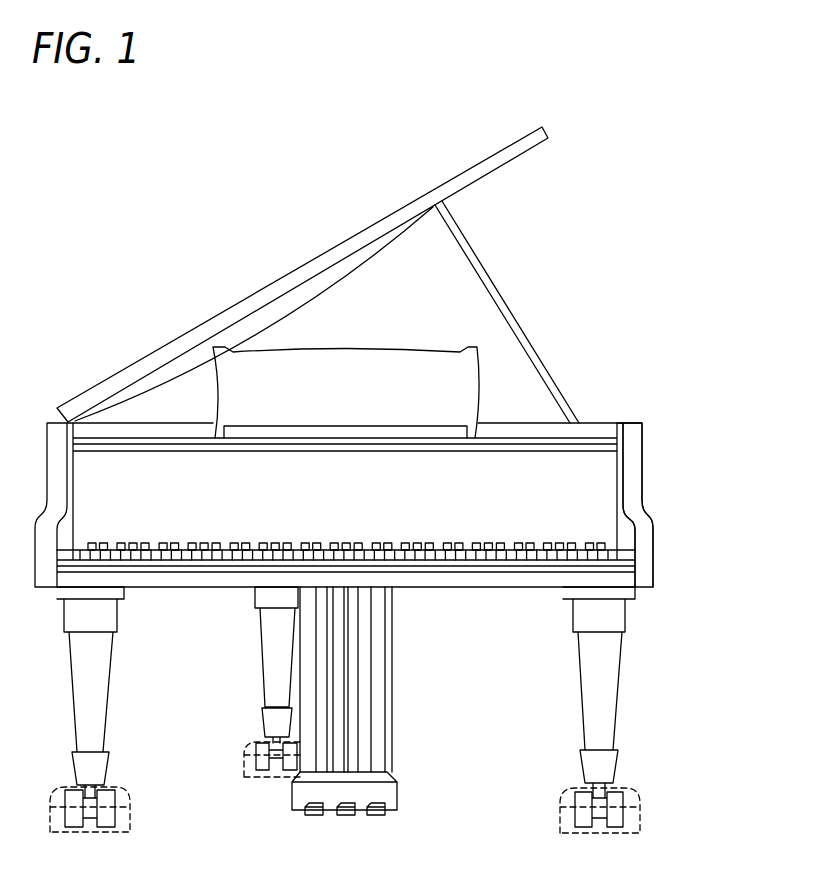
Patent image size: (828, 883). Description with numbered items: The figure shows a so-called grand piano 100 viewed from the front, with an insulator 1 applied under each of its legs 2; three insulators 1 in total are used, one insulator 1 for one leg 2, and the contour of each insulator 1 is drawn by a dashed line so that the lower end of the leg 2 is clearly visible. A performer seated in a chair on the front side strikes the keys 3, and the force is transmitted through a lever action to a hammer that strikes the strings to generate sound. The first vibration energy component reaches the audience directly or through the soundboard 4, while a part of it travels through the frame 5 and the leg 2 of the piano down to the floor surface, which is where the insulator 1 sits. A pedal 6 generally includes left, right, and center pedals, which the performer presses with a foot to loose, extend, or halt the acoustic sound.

The grand piano 100 is at (705, 373).
The insulator 1 is at (636, 798).
The leg 2 is at (618, 668).
The keys 3 is at (472, 557).
The soundboard 4 is at (510, 160).
The frame 5 is at (643, 493).
The pedal 6 is at (398, 792).